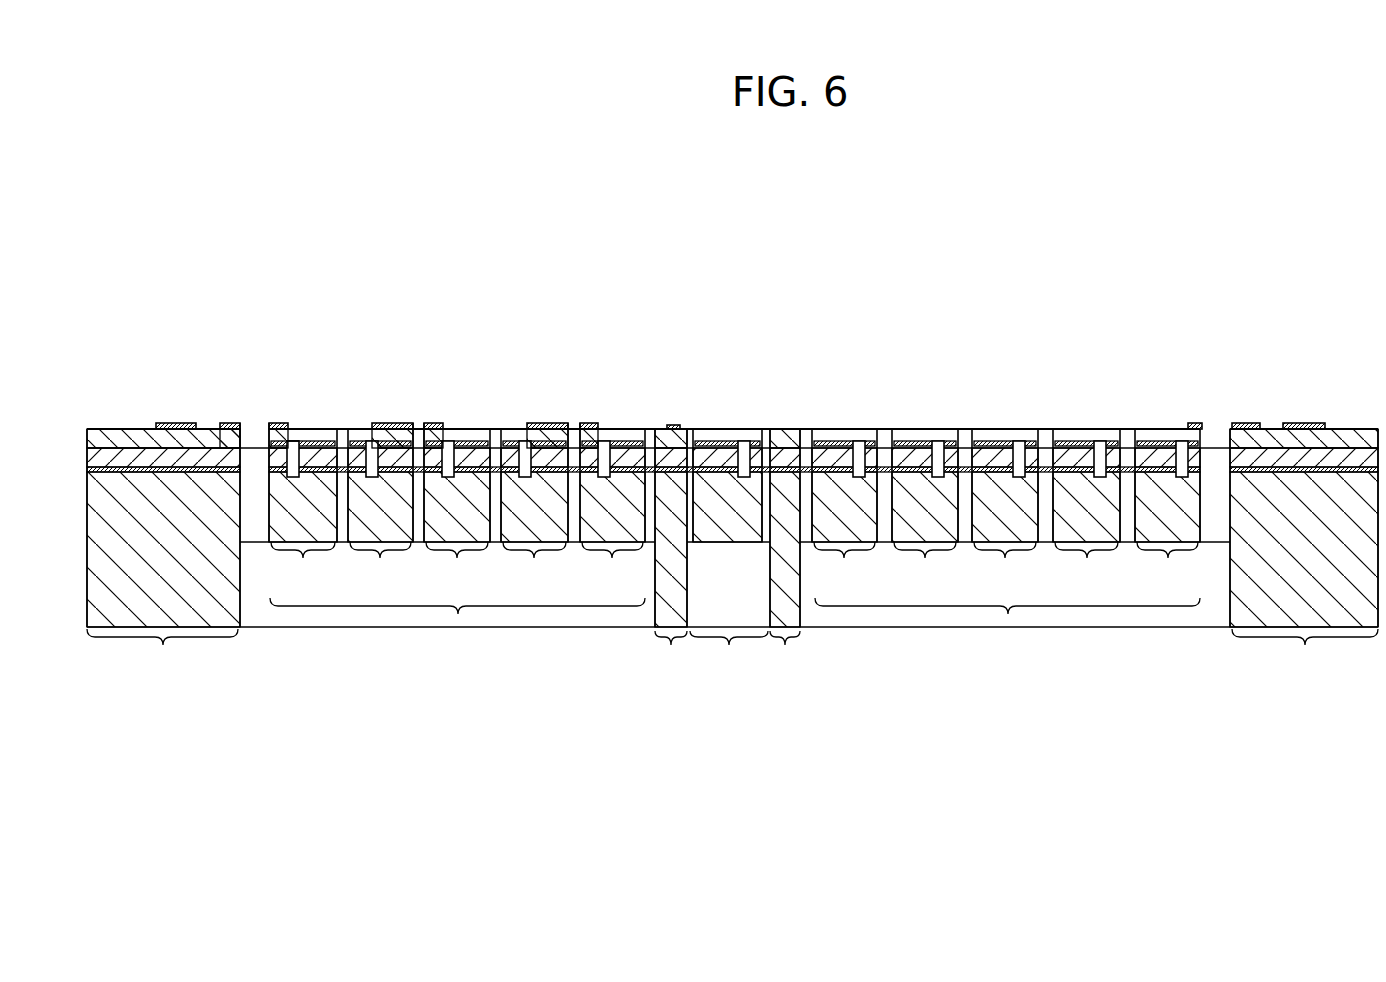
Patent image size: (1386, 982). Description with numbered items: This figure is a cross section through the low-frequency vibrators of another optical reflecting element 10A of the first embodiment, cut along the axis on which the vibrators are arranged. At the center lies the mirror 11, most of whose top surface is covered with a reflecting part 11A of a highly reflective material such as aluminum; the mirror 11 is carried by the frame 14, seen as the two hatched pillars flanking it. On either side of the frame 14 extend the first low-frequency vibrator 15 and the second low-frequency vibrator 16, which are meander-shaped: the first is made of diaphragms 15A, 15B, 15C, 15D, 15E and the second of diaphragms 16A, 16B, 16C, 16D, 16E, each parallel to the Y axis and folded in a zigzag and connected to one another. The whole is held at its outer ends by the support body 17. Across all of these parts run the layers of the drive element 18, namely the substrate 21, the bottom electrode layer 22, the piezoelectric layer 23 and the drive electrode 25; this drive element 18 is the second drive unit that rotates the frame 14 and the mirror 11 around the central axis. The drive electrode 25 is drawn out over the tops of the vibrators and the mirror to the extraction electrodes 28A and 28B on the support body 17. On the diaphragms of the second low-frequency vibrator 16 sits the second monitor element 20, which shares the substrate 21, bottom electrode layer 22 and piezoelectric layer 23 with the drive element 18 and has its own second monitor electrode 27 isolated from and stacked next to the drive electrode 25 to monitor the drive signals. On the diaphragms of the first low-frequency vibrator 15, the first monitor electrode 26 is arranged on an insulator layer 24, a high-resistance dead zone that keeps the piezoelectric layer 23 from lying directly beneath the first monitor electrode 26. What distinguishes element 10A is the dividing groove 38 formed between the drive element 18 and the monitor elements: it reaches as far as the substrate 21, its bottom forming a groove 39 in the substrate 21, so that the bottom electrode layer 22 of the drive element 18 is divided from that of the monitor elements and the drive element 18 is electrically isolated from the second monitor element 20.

The optical reflecting element 10A is at (1266, 232).
The mirror 11 is at (729, 557).
The reflecting part 11A is at (707, 437).
The frame 14 is at (727, 557).
The low-frequency vibrator 15 is at (728, 473).
The diaphragm 15A is at (612, 510).
The diaphragm 15B is at (534, 510).
The diaphragm 15C is at (457, 510).
The diaphragm 15D is at (380, 510).
The diaphragm 15E is at (728, 462).
The low-frequency vibrator 16 is at (1014, 480).
The diaphragm 16A is at (844, 519).
The diaphragm 16B is at (925, 519).
The diaphragm 16C is at (1005, 519).
The diaphragm 16D is at (936, 457).
The diaphragm 16E is at (1101, 450).
The support body 17 is at (732, 554).
The drive element 18 is at (353, 437).
The second monitor element 20 is at (877, 435).
The substrate 21 is at (1057, 442).
The bottom electrode layer 22 is at (325, 443).
The piezoelectric layer 23 is at (313, 450).
The insulator layer 24 is at (280, 430).
The drive electrode 25 is at (1105, 442).
The first monitor electrode 26 is at (282, 430).
The second monitor electrode 27 is at (1200, 442).
The extraction electrode 28A is at (176, 427).
The extraction electrode 28B is at (1300, 427).
The dividing groove 38 is at (293, 443).
The groove 39 is at (290, 475).